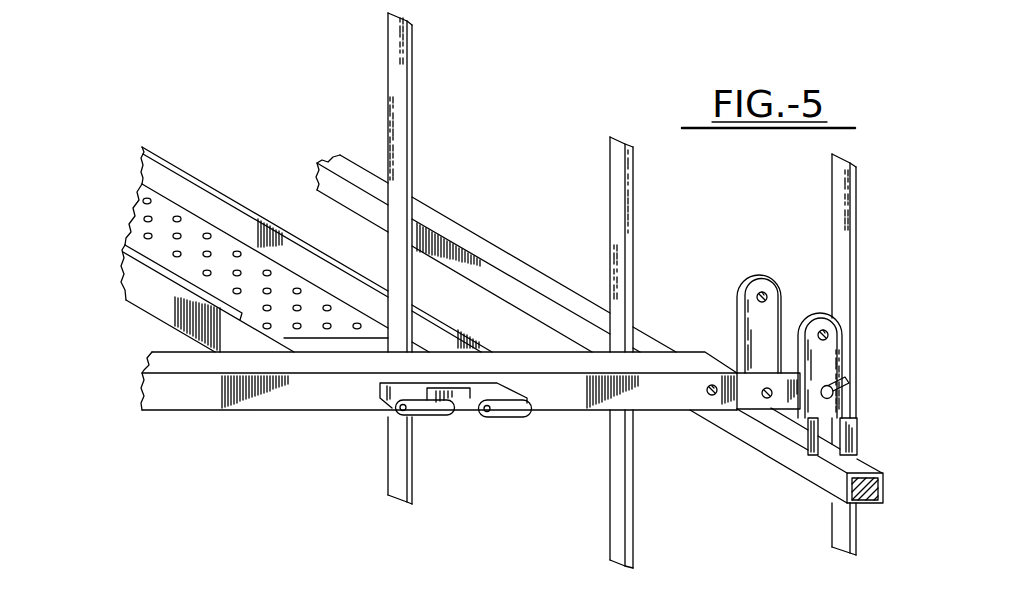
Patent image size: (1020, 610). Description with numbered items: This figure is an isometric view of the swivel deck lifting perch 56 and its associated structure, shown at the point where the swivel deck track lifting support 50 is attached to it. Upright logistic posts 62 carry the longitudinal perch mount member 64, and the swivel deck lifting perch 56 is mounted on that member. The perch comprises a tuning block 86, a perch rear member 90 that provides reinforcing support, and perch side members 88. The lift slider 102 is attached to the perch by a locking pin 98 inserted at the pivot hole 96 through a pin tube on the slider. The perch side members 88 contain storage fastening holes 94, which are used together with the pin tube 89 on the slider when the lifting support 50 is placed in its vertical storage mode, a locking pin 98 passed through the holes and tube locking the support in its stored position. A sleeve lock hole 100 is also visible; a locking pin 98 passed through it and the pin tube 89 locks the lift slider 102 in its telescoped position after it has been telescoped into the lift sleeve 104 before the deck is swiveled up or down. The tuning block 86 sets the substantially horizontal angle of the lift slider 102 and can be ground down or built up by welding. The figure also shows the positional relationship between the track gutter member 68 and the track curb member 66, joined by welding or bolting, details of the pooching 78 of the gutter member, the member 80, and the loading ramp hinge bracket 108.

The swivel deck track lifting support 50 is at (364, 414).
The swivel deck lifting perch 56 is at (790, 450).
The logistic posts 62 is at (400, 115).
The longitudinal perch mount member 64 is at (473, 240).
The track curb member 66 is at (187, 163).
The track gutter member 68 is at (193, 230).
The pooching 78 is at (205, 274).
The front cross beam 80 is at (340, 346).
The tuning block 86 is at (789, 436).
The perch side members 88 is at (762, 277).
The pin tube 89 is at (766, 388).
The perch rear member 90 is at (857, 421).
The storage fastening holes 94 is at (823, 331).
The pivot hole 96 is at (829, 363).
The locking pin 98 is at (843, 381).
The sleeve lock hole 100 is at (712, 396).
The lift slider 102 is at (756, 409).
The lift sleeve 104 is at (233, 412).
The loading ramp hinge bracket 108 is at (420, 412).